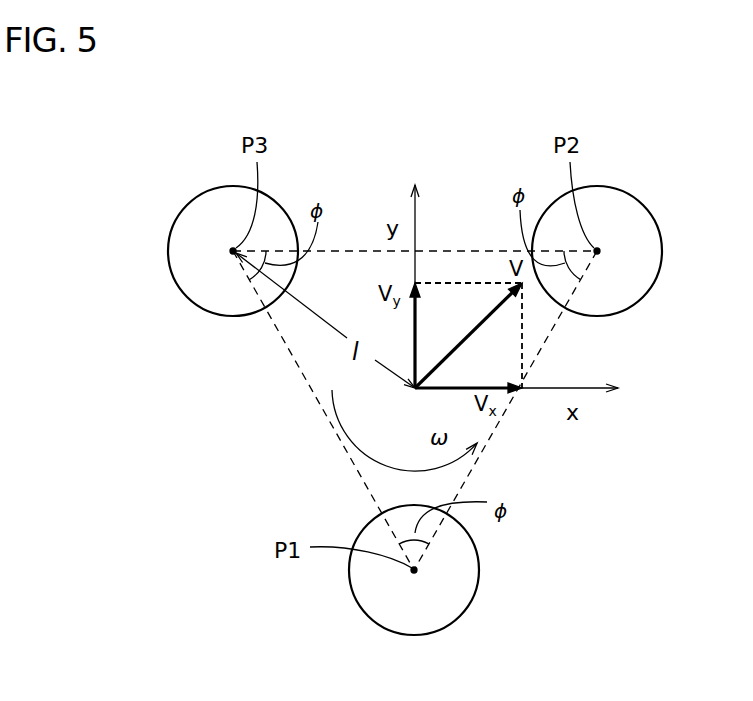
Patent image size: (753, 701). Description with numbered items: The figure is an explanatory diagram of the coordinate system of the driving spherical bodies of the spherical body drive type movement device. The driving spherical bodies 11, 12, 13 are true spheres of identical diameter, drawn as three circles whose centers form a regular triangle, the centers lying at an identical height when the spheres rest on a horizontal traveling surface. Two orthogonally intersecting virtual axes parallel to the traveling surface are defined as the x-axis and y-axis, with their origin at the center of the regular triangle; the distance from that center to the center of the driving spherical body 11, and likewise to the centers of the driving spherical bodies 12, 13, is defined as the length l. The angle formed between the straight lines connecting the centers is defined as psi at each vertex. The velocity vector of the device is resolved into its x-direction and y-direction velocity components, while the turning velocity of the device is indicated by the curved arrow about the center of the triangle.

The driving spherical body 11 is at (463, 580).
The driving spherical body 12 is at (638, 215).
The driving spherical body 13 is at (192, 215).